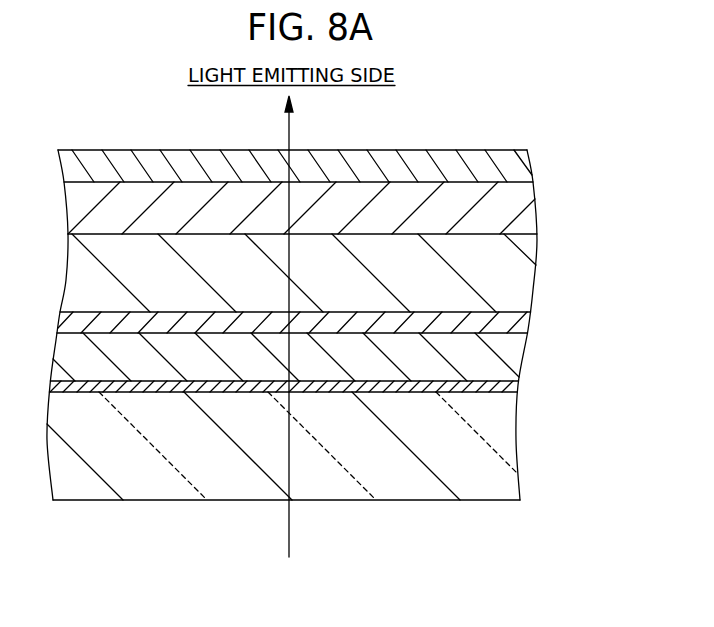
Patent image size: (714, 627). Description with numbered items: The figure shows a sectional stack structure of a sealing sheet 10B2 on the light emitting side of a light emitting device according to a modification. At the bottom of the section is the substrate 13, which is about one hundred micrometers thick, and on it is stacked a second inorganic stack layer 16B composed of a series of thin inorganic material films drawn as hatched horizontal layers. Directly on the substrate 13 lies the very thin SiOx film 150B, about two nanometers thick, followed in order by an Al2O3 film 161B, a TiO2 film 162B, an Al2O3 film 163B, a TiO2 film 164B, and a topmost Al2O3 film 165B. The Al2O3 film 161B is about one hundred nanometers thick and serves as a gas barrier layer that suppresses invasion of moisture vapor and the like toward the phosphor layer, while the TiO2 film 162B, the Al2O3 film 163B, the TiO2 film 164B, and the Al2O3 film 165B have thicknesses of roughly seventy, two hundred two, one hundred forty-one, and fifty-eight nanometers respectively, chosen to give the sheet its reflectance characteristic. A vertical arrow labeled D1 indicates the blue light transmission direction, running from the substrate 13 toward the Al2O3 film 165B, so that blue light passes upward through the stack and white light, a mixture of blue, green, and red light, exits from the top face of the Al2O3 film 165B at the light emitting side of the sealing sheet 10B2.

The sealing sheet 10B2 is at (364, 288).
The second inorganic stack layer 16B is at (365, 273).
The Al2O3 film 165B is at (517, 165).
The TiO2 film 164B is at (517, 207).
The Al2O3 film 163B is at (522, 268).
The TiO2 film 162B is at (517, 323).
The Al2O3 film 161B is at (505, 355).
The SiOx film 150B is at (330, 387).
The substrate 13 is at (505, 450).
The blue light transmission direction D1 is at (291, 521).